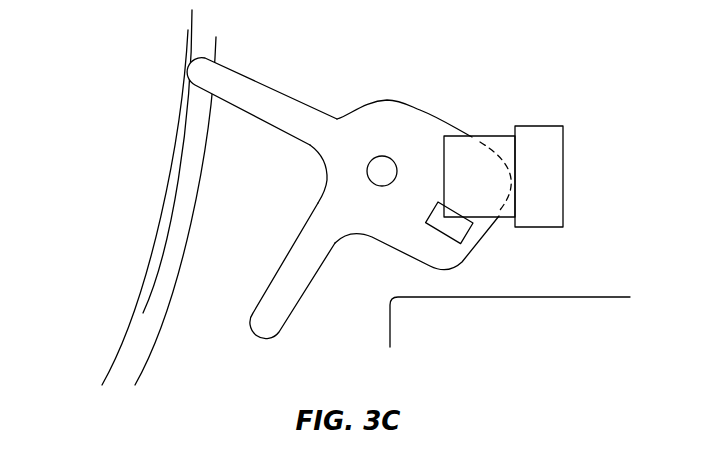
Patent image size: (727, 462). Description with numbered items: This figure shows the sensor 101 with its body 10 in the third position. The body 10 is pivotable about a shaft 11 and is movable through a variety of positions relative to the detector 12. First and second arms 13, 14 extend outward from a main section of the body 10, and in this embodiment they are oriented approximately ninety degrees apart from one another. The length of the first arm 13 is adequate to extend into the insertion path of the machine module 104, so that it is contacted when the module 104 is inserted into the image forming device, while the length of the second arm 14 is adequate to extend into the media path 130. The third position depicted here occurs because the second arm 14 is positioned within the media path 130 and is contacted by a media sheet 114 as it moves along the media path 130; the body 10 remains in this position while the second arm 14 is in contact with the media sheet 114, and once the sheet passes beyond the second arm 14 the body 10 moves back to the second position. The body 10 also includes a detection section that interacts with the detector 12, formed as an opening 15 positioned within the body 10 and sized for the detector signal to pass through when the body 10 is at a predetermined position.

The body 10 is at (420, 111).
The shaft 11 is at (381, 156).
The detector 12 is at (563, 163).
The first arm 13 is at (280, 269).
The second arm 14 is at (255, 79).
The opening 15 is at (468, 233).
The sensor 101 is at (497, 54).
The machine module 104 is at (600, 297).
The media sheet 114 is at (148, 305).
The media path 130 is at (118, 347).